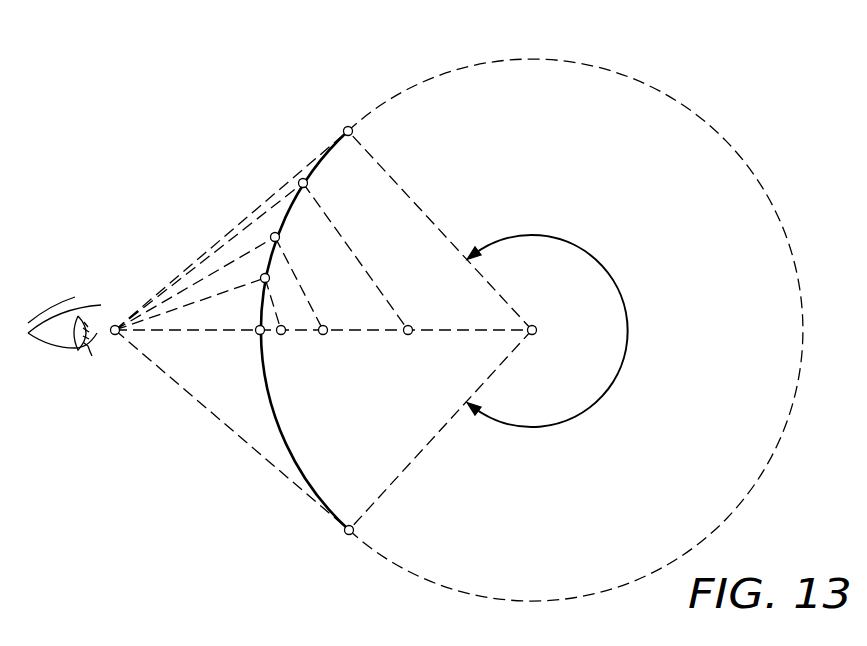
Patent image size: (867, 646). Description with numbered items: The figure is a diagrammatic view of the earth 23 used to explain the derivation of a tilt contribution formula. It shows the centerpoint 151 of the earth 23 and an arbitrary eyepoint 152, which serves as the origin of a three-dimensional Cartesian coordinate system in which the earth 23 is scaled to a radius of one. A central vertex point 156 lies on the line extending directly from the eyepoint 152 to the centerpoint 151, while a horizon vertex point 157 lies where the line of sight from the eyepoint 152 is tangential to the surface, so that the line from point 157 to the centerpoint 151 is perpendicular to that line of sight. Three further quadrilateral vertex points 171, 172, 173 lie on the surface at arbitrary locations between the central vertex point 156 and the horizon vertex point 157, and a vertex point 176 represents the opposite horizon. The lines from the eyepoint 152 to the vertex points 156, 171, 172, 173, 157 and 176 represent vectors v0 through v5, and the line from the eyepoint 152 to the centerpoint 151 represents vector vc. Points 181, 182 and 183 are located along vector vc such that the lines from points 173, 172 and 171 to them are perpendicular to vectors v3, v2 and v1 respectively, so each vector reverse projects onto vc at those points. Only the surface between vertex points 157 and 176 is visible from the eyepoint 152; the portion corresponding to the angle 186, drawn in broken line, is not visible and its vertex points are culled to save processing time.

The earth 23 is at (594, 68).
The centerpoint 151 is at (536, 327).
The eyepoint 152 is at (116, 325).
The central vertex point 156 is at (258, 335).
The horizon vertex point 157 is at (346, 127).
The quadrilateral vertex point 171 is at (269, 279).
The quadrilateral vertex point 172 is at (272, 232).
The quadrilateral vertex point 173 is at (306, 184).
The vertex point 176 is at (348, 537).
The point 181 is at (411, 335).
The point 182 is at (326, 335).
The point 183 is at (282, 335).
The angle 186 is at (578, 245).